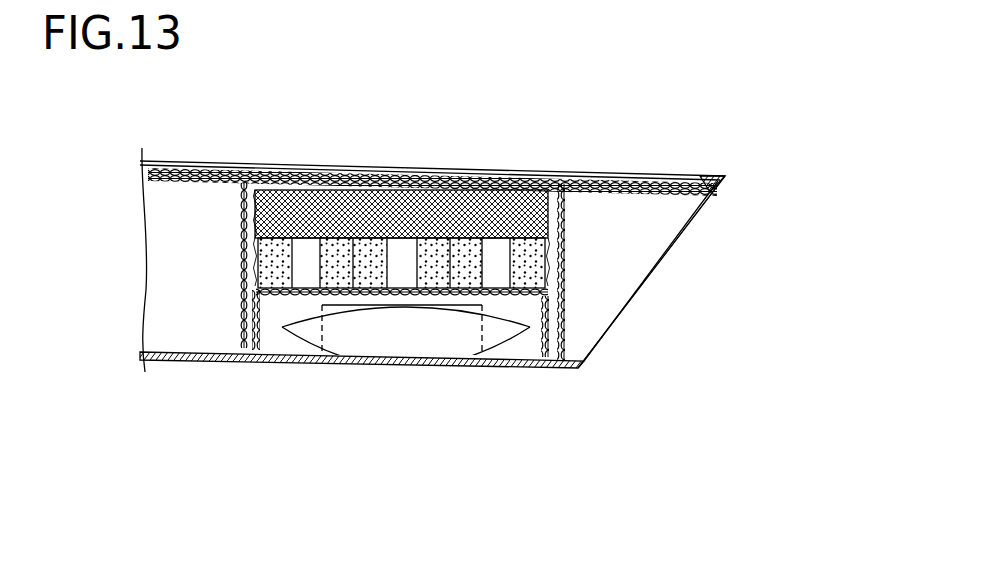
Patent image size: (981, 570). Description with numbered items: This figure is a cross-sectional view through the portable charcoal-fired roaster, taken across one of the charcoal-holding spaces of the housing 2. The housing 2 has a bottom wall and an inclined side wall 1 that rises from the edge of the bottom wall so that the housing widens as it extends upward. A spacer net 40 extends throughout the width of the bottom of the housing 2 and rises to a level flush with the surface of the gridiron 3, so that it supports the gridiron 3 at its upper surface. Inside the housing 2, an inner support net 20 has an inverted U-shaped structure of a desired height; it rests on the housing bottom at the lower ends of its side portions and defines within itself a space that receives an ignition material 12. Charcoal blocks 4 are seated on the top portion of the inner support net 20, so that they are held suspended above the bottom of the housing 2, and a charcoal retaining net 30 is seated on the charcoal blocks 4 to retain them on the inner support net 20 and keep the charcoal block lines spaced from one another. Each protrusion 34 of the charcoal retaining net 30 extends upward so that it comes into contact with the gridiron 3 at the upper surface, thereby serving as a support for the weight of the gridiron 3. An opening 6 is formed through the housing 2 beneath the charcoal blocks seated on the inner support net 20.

The inclined side wall 1 is at (640, 292).
The housing 2 is at (678, 270).
The gridiron 3 is at (532, 183).
The charcoal blocks 4 is at (521, 288).
The opening 6 is at (322, 368).
The ignition material 12 is at (342, 363).
The inner support net 20 is at (437, 290).
The charcoal retaining net 30 is at (500, 213).
The protrusion 34 is at (368, 180).
The spacer net 40 is at (243, 303).